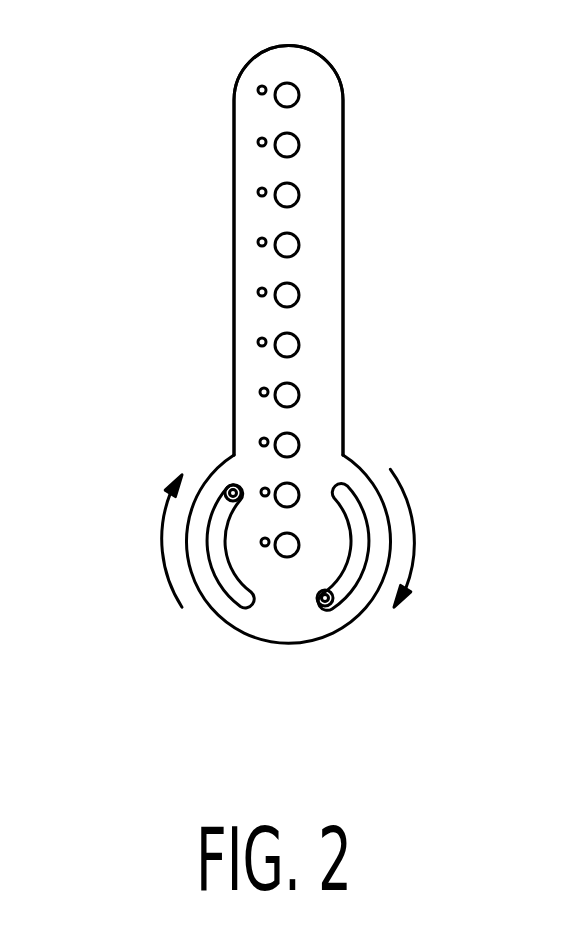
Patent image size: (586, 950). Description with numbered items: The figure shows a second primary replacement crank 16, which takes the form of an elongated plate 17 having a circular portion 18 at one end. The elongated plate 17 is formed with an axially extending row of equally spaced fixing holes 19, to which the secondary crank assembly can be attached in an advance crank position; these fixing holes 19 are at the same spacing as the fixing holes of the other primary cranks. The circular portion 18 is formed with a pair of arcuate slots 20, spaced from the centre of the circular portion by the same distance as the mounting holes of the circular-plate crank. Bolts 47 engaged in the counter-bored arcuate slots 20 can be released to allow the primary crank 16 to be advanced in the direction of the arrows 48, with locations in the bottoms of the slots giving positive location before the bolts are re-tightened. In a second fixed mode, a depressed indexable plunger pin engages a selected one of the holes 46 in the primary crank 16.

The second primary replacement crank 16 is at (343, 83).
The elongated plate 17 is at (322, 296).
The circular portion 18 is at (285, 622).
The fixing holes 19 is at (300, 190).
The arcuate slots 20 is at (212, 538).
The holes 46 is at (258, 91).
The bolts 47 is at (332, 604).
The arrows 48 is at (170, 588).